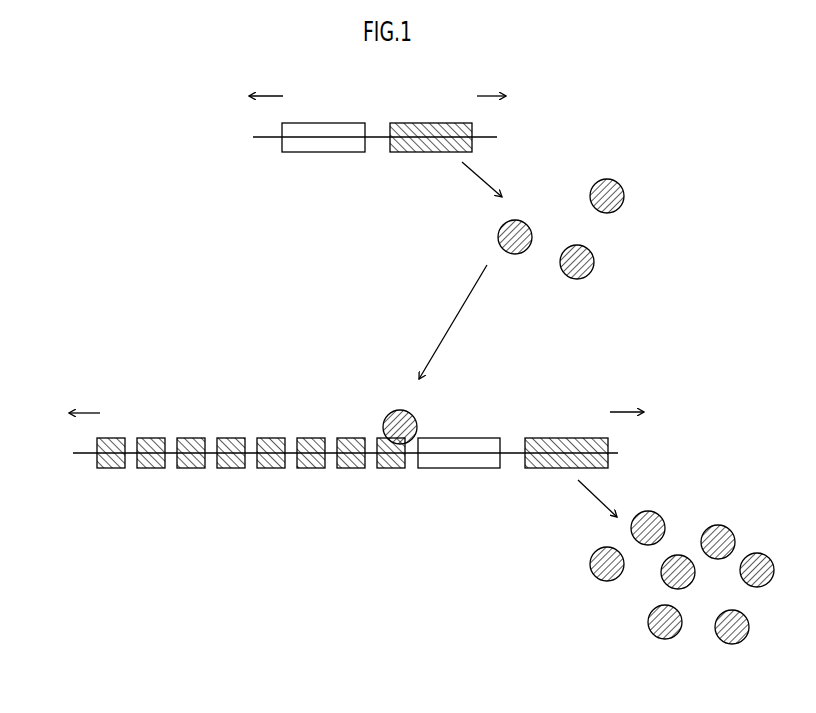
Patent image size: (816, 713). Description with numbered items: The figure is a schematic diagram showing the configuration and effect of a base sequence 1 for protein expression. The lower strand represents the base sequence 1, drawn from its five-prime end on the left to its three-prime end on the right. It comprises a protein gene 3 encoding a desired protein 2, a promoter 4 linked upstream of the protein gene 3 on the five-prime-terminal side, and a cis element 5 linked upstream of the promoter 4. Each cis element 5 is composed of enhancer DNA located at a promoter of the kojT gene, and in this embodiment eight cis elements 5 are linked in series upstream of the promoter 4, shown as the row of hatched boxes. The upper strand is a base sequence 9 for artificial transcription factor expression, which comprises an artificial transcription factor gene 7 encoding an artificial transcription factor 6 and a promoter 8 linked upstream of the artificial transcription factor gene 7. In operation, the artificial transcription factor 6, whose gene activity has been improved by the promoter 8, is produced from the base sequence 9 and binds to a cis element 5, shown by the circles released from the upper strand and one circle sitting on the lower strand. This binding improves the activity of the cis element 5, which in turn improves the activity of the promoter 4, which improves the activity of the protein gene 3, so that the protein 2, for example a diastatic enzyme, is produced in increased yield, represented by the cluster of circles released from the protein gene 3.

The base sequence for protein expression 1 is at (167, 374).
The protein 2 is at (603, 581).
The protein gene 3 is at (542, 469).
The promoter 4 is at (447, 469).
The cis element 5 is at (311, 469).
The artificial transcription factor 6 is at (595, 255).
The artificial transcription factor gene 7 is at (420, 153).
The promoter 8 is at (318, 153).
The base sequence for artificial transcription factor expression 9 is at (392, 97).